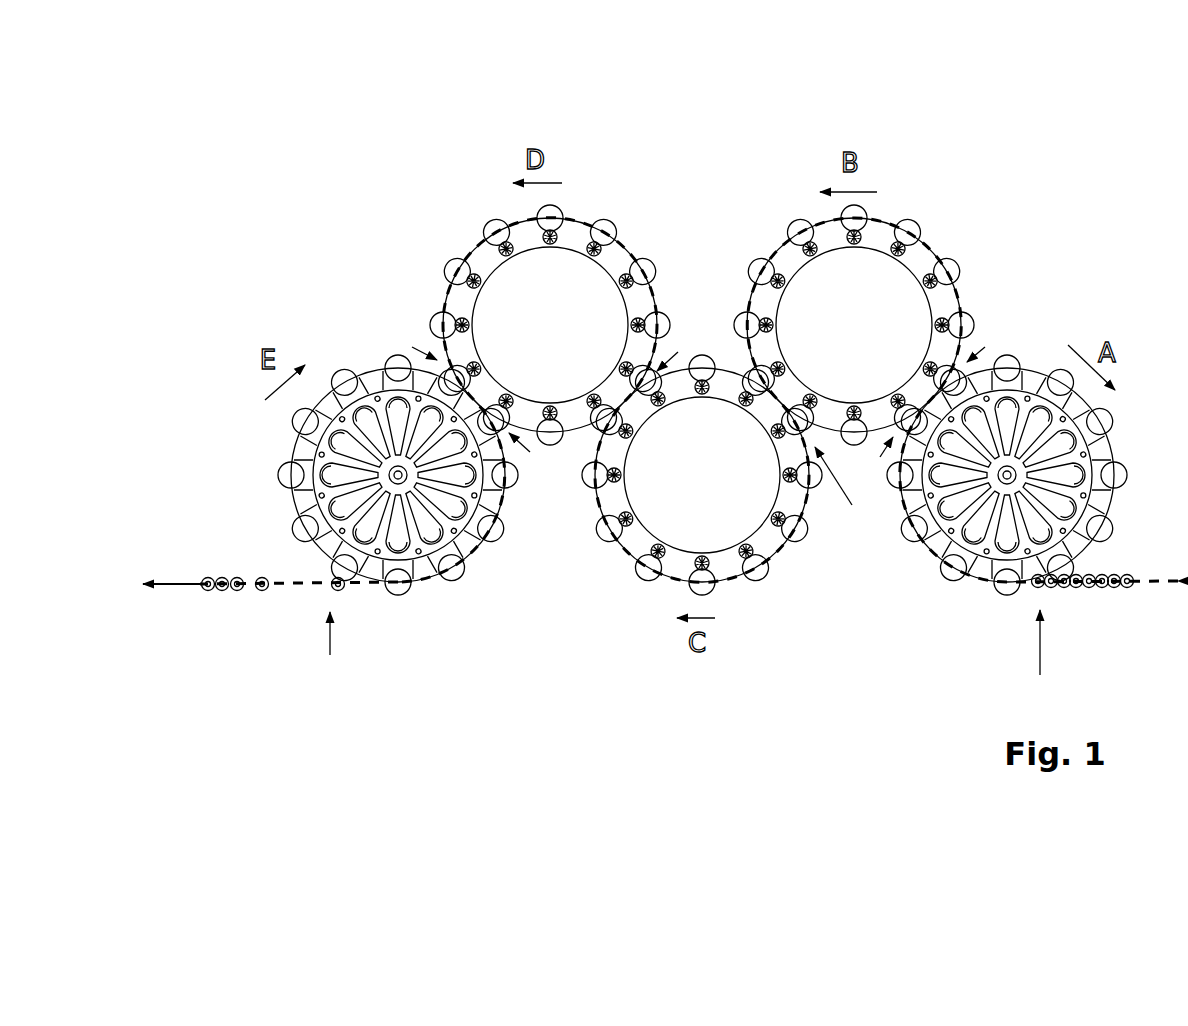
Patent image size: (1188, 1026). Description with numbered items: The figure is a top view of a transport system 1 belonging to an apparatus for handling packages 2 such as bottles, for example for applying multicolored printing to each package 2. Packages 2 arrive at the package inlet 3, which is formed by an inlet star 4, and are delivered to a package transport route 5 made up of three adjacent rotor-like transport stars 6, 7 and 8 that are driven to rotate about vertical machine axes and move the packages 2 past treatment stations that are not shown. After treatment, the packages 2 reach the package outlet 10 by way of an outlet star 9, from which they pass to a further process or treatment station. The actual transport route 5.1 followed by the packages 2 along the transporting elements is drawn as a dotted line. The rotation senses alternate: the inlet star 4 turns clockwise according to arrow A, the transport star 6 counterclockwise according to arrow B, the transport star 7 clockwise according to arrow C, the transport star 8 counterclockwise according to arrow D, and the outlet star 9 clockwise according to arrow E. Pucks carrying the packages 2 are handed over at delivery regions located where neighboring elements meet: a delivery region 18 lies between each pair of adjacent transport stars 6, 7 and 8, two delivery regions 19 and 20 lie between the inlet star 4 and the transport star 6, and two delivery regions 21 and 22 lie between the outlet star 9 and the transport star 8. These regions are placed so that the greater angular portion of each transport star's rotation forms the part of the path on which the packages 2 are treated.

The transport system 1 is at (973, 123).
The package 2 is at (227, 591).
The package inlet 3 is at (1039, 662).
The inlet star 4 is at (1050, 332).
The package transport route 5 is at (714, 152).
The actual transport route 5.1 is at (306, 591).
The transport star 6 is at (945, 228).
The transport star 7 is at (782, 563).
The transport star 8 is at (458, 232).
The outlet star 9 is at (362, 352).
The package outlet 10 is at (330, 658).
The delivery region 18 is at (768, 427).
The delivery region 19 is at (873, 459).
The delivery region 20 is at (991, 341).
The delivery region 21 is at (409, 343).
The delivery region 22 is at (532, 453).